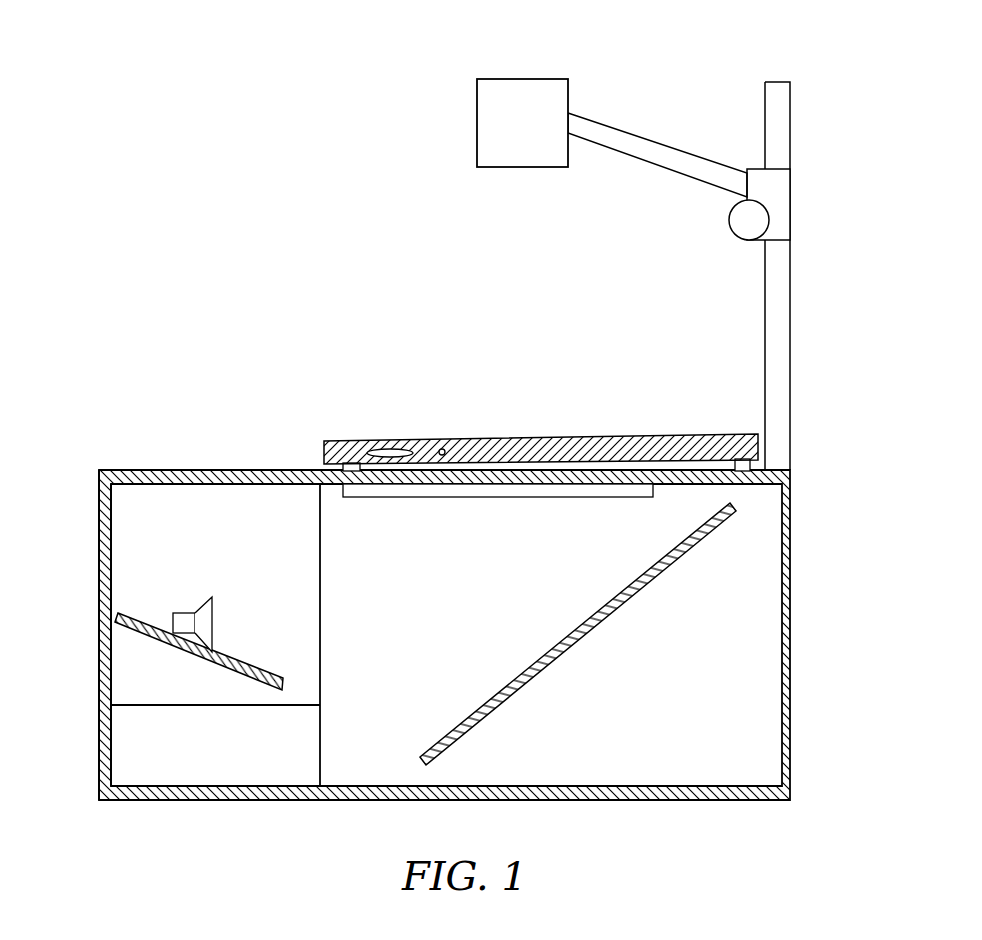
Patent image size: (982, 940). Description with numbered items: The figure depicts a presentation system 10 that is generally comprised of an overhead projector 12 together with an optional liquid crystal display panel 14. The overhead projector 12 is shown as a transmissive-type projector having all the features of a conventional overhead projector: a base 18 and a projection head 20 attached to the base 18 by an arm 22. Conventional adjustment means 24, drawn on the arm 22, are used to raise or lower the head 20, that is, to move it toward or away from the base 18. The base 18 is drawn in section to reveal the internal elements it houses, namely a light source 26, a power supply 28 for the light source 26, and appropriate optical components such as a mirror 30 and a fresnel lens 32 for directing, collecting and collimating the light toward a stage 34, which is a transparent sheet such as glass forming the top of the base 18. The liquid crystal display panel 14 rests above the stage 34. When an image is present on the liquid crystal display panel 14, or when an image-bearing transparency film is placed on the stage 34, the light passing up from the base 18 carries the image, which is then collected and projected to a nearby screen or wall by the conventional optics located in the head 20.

The presentation system 10 is at (667, 377).
The overhead projector 12 is at (798, 667).
The liquid crystal display panel 14 is at (352, 438).
The base 18 is at (100, 518).
The projection head 20 is at (503, 85).
The arm 22 is at (783, 273).
The adjustment means 24 is at (782, 190).
The light source 26 is at (200, 625).
The power supply 28 is at (193, 760).
The mirror 30 is at (458, 727).
The fresnel lens 32 is at (392, 497).
The stage 34 is at (495, 438).